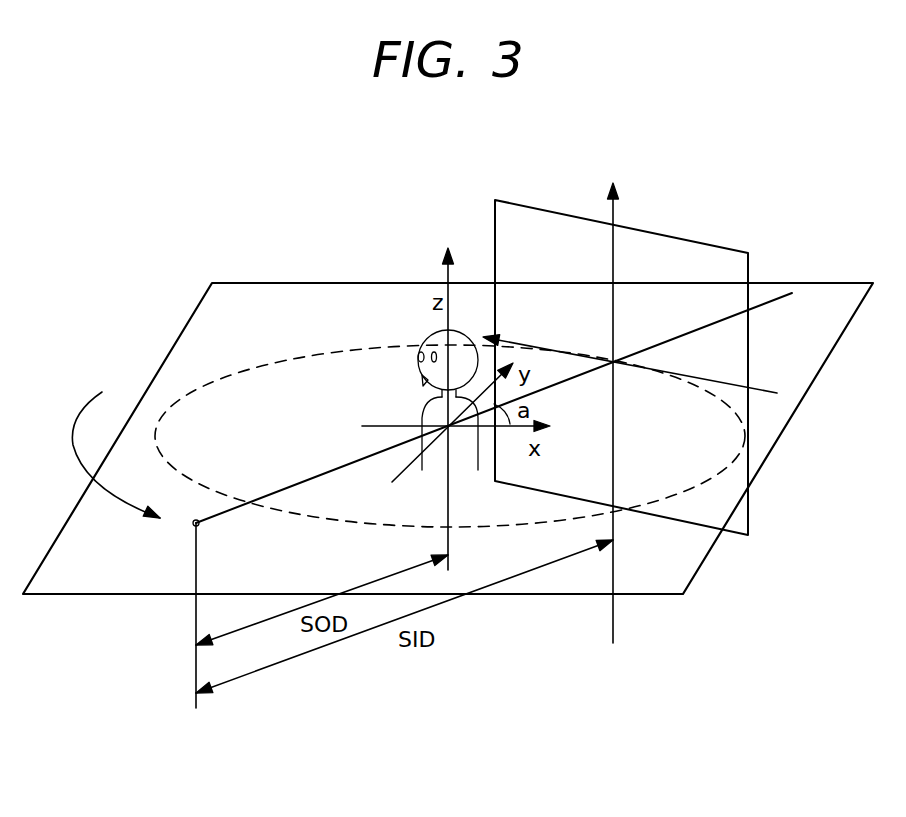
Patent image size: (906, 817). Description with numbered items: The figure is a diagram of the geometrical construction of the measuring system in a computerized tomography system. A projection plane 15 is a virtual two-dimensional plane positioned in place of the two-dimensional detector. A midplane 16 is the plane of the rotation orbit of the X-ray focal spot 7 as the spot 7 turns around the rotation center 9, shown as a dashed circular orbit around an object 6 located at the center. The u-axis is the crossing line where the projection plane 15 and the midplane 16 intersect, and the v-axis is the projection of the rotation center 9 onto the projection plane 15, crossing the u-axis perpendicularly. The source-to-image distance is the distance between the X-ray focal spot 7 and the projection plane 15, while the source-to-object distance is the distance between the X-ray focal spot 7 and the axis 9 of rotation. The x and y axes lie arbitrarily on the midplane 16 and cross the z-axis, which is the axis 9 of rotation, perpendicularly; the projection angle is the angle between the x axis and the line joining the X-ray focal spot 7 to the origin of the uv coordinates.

The midplane 16 is at (262, 283).
The projection plane 15 is at (733, 535).
The X-ray focal spot 7 is at (192, 527).
The rotation center 9 is at (440, 527).
The patient / object under examination 6 is at (438, 332).